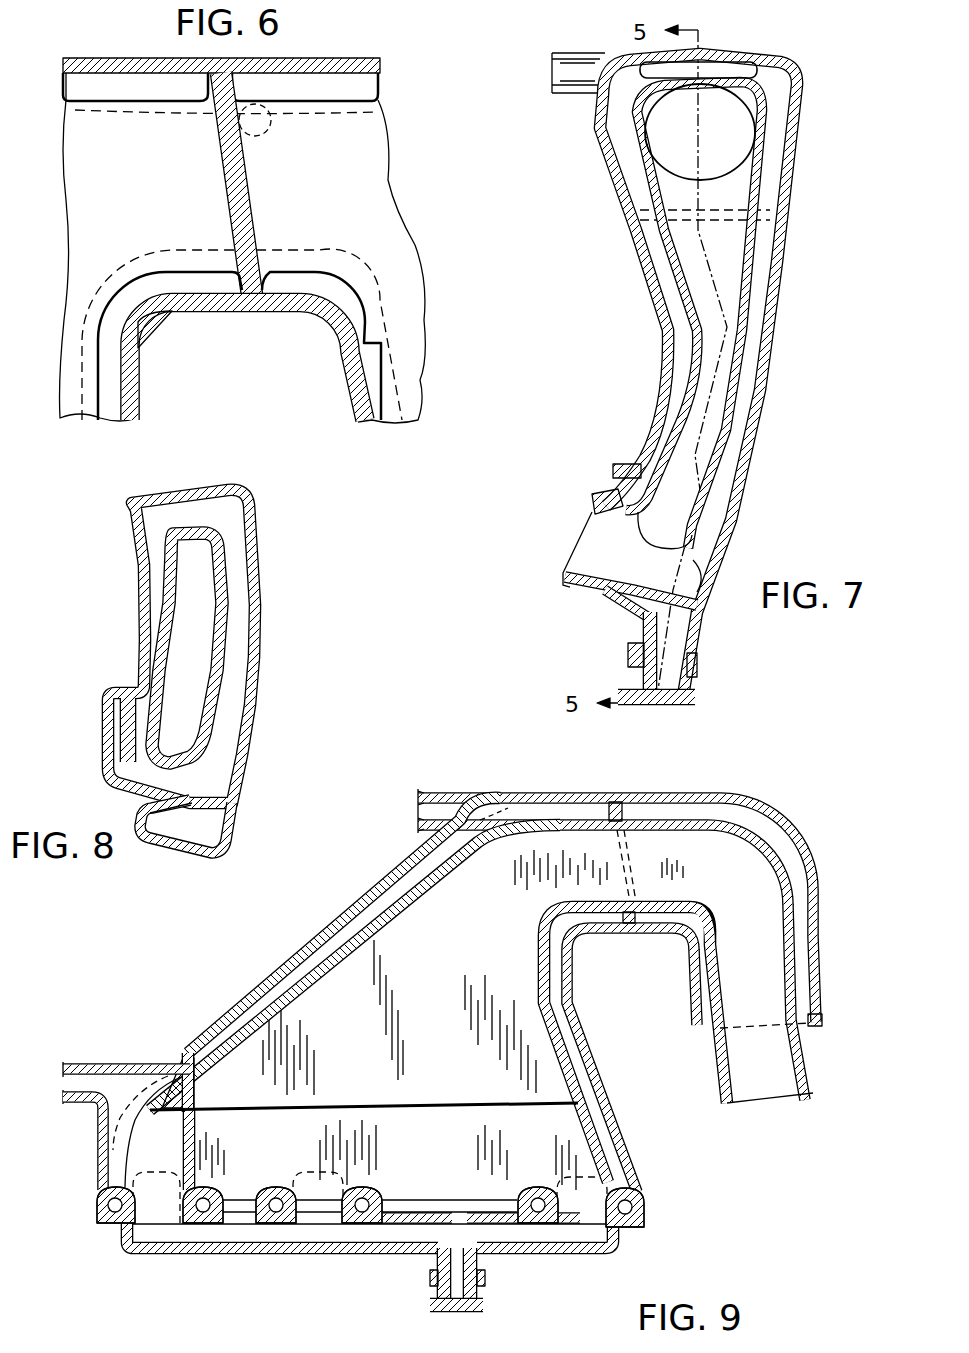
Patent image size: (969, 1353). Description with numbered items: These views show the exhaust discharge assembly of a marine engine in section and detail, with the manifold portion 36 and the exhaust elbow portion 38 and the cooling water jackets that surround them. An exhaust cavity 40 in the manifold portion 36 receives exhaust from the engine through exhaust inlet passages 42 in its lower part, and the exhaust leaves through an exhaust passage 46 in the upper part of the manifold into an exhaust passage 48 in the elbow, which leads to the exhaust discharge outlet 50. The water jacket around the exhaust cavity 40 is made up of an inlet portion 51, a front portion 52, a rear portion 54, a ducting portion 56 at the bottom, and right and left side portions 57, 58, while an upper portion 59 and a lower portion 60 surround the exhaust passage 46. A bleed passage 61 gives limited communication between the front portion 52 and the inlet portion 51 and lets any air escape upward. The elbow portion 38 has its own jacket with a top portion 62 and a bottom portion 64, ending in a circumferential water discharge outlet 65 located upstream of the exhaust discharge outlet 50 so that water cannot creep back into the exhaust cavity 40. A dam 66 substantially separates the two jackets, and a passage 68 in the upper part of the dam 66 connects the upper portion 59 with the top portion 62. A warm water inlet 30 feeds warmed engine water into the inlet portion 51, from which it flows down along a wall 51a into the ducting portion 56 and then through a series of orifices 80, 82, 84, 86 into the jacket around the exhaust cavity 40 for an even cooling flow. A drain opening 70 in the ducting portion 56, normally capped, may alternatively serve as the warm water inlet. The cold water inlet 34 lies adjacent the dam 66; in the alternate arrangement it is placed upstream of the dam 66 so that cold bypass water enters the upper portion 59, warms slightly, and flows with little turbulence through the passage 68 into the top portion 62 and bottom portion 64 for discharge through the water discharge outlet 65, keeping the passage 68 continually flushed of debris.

In FIG. 9, the warm water inlet 30 is at (135, 1064).
In FIG. 6, the cold water inlet 34 is at (270, 133).
In FIG. 7, the cold water inlet 34 is at (598, 55).
In FIG. 9, the cold water inlet 34 is at (460, 797).
In FIG. 9, the manifold portion 36 is at (335, 903).
In FIG. 9, the exhaust elbow portion 38 is at (810, 822).
In FIG. 7, the exhaust cavity 40 is at (728, 350).
In FIG. 8, the exhaust cavity 40 is at (200, 607).
In FIG. 9, the exhaust cavity 40 is at (452, 1003).
In FIG. 7, the exhaust inlet passages 42 is at (583, 540).
In FIG. 6, the exhaust passage 46 is at (353, 193).
In FIG. 9, the exhaust passage 46 is at (683, 859).
In FIG. 9, the exhaust passage 48 is at (772, 1012).
In FIG. 9, the exhaust discharge outlet 50 is at (770, 1103).
In FIG. 9, the inlet portion 51 is at (108, 1147).
In FIG. 9, the wall 51a is at (197, 1117).
In FIG. 8, the front portion 52 is at (200, 507).
In FIG. 9, the front portion 52 is at (302, 980).
In FIG. 9, the rear portion 54 is at (567, 1038).
In FIG. 7, the ducting portion 56 is at (640, 602).
In FIG. 8, the ducting portion 56 is at (203, 830).
In FIG. 9, the ducting portion 56 is at (393, 1244).
In FIG. 7, the right side portion 57 is at (770, 247).
In FIG. 8, the right side portion 57 is at (237, 633).
In FIG. 9, the right side portion 57 is at (428, 1154).
In FIG. 7, the left side portion 58 is at (657, 255).
In FIG. 8, the left side portion 58 is at (157, 605).
In FIG. 6, the upper portion 59 is at (140, 82).
In FIG. 9, the upper portion 59 is at (567, 807).
In FIG. 6, the lower portion 60 is at (200, 283).
In FIG. 9, the lower portion 60 is at (612, 915).
In FIG. 9, the bleed passage 61 is at (187, 1055).
In FIG. 6, the top portion 62 is at (327, 88).
In FIG. 9, the top portion 62 is at (745, 817).
In FIG. 6, the bottom portion 64 is at (347, 297).
In FIG. 9, the bottom portion 64 is at (663, 933).
In FIG. 9, the circumferential water discharge outlet 65 is at (818, 1020).
In FIG. 6, the dam 66 is at (230, 168).
In FIG. 7, the dam 66 is at (778, 97).
In FIG. 9, the dam 66 is at (613, 872).
In FIG. 7, the passage 68 is at (722, 72).
In FIG. 9, the passage 68 is at (633, 800).
In FIG. 7, the drain opening 70 is at (683, 637).
In FIG. 9, the drain opening 70 is at (449, 1310).
In FIG. 8, the orifice 80 is at (197, 805).
In FIG. 9, the orifice 80 is at (237, 1224).
In FIG. 7, the orifice 82 is at (677, 578).
In FIG. 9, the orifice 82 is at (317, 1222).
In FIG. 9, the orifice 84 is at (462, 1225).
In FIG. 9, the orifice 86 is at (593, 1230).